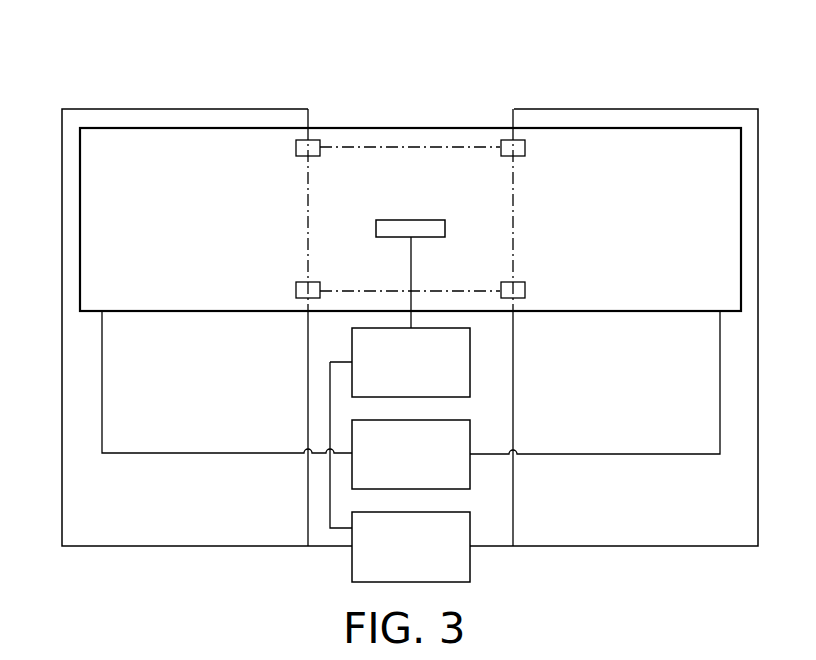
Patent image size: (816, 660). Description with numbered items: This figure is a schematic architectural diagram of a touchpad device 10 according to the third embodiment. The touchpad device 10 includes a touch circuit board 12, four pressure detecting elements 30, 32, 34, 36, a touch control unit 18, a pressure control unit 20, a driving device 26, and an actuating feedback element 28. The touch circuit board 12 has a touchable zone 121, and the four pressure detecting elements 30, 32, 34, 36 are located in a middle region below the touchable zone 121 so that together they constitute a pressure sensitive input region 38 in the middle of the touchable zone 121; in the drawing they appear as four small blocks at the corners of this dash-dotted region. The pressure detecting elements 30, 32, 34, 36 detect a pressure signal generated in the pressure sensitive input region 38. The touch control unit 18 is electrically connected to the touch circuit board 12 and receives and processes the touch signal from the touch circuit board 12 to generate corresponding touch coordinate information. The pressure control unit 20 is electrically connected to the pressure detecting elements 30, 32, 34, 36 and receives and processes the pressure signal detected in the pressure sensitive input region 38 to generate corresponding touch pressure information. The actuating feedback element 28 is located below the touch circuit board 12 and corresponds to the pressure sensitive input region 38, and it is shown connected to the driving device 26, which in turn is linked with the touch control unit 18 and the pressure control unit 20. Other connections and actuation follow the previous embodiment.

The touchpad device 10 is at (52, 96).
The touch circuit board 12 is at (627, 127).
The touchable zone 121 is at (675, 135).
The touch control unit 18 is at (470, 470).
The pressure control unit 20 is at (470, 560).
The driving device 26 is at (470, 378).
The actuating feedback element 28 is at (420, 218).
The pressure detecting element 30 is at (317, 140).
The pressure detecting element 32 is at (502, 140).
The pressure detecting element 34 is at (296, 296).
The pressure detecting element 36 is at (525, 296).
The pressure sensitive input region 38 is at (376, 176).